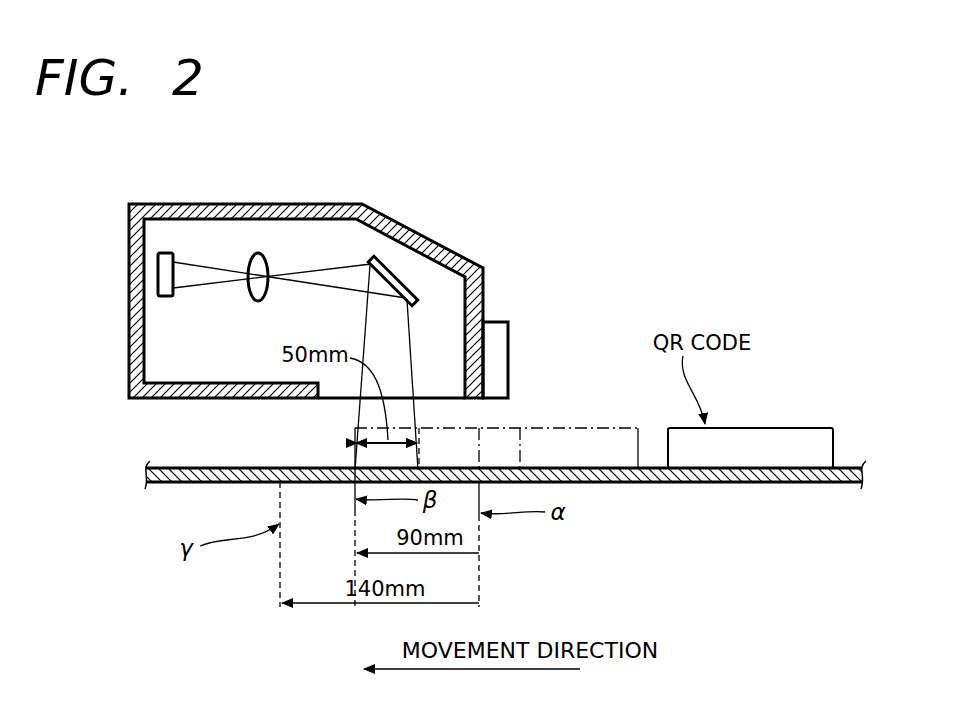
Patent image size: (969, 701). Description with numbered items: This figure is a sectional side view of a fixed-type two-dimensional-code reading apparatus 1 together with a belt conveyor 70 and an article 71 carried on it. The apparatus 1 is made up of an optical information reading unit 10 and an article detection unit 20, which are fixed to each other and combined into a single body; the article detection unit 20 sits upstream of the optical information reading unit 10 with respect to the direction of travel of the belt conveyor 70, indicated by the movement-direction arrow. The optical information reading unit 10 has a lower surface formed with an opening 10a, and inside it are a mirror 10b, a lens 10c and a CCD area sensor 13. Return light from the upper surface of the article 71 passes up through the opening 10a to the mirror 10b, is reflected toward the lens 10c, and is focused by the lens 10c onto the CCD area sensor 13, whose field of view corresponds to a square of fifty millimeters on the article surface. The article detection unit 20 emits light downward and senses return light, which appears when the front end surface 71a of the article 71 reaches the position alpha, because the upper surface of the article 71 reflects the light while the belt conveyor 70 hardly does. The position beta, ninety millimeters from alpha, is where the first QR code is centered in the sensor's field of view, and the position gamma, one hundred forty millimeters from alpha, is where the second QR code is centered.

The two-dimensional-code reading apparatus 1 is at (380, 188).
The optical information reading unit 10 is at (296, 205).
The opening 10a is at (330, 399).
The mirror 10b is at (376, 258).
The lens 10c is at (250, 295).
The CCD area sensor 13 is at (165, 252).
The article detection unit 20 is at (495, 335).
The belt conveyor 70 is at (850, 467).
The article 71 is at (730, 462).
The front end surface 71a is at (668, 455).